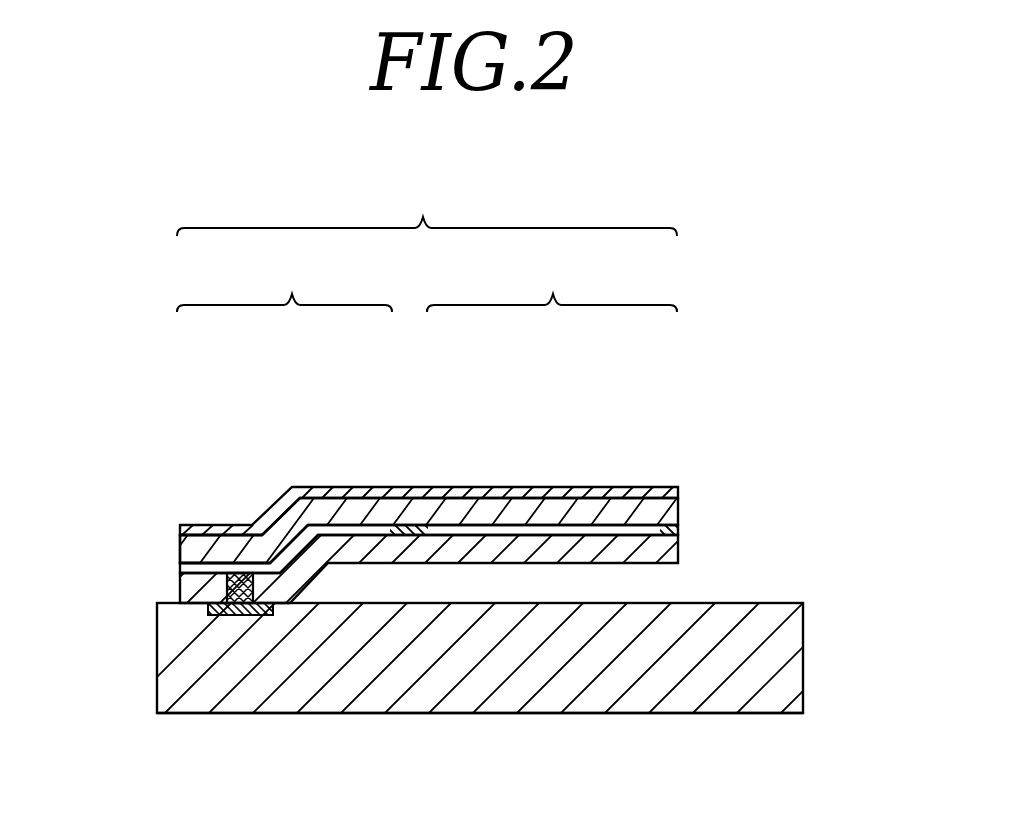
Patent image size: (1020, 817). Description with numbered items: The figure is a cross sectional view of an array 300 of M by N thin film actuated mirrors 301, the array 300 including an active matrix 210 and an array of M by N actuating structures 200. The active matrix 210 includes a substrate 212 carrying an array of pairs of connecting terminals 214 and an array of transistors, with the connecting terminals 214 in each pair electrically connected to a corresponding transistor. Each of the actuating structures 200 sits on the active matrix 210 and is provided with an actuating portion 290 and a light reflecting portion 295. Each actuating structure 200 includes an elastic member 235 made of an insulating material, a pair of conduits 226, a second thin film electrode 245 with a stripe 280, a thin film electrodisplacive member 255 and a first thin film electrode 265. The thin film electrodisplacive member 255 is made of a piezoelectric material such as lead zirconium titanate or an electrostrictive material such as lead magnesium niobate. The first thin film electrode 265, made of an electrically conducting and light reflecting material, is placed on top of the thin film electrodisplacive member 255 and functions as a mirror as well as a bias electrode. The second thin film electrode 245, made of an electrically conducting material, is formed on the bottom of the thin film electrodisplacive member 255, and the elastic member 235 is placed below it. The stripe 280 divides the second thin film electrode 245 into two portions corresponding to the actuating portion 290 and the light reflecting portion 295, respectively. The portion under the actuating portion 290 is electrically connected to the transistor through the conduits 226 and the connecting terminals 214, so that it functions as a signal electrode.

The actuating structure 200 is at (817, 487).
The active matrix 210 is at (817, 603).
The substrate 212 is at (412, 703).
The connecting terminals 214 is at (227, 615).
The conduits 226 is at (237, 594).
The elastic member 235 is at (530, 543).
The second thin film electrode 245 is at (327, 498).
The thin film electrodisplacive member 255 is at (443, 507).
The first thin film electrode 265 is at (647, 487).
The stripe 280 is at (408, 535).
The actuating portion 290 is at (284, 279).
The light reflecting portion 295 is at (552, 279).
The array 300 is at (810, 170).
The thin film actuated mirrors 301 is at (427, 200).